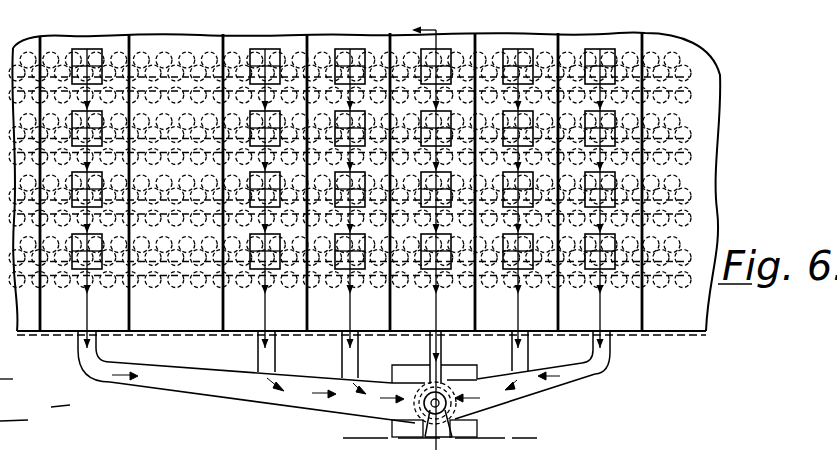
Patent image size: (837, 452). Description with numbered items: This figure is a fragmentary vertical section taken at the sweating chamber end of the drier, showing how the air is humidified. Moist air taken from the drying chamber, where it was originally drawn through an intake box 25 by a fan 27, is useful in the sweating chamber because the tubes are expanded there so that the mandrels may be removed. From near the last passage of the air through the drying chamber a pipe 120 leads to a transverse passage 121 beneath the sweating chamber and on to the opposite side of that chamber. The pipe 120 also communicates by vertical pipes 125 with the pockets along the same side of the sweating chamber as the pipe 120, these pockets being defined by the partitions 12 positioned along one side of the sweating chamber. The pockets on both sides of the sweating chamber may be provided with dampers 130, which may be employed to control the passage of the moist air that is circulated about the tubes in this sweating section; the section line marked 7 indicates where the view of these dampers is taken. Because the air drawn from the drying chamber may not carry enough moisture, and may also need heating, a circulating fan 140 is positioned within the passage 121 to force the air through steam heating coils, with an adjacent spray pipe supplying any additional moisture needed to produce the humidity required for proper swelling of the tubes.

The section line 7 is at (413, 35).
The partitions 12 is at (222, 312).
The intake box 25 is at (35, 418).
The fan 27 is at (18, 380).
The pipe 120 is at (322, 410).
The transverse passage 121 is at (458, 366).
The vertical pipes 125 is at (97, 348).
The dampers 130 is at (264, 50).
The circulating fan 140 is at (481, 414).